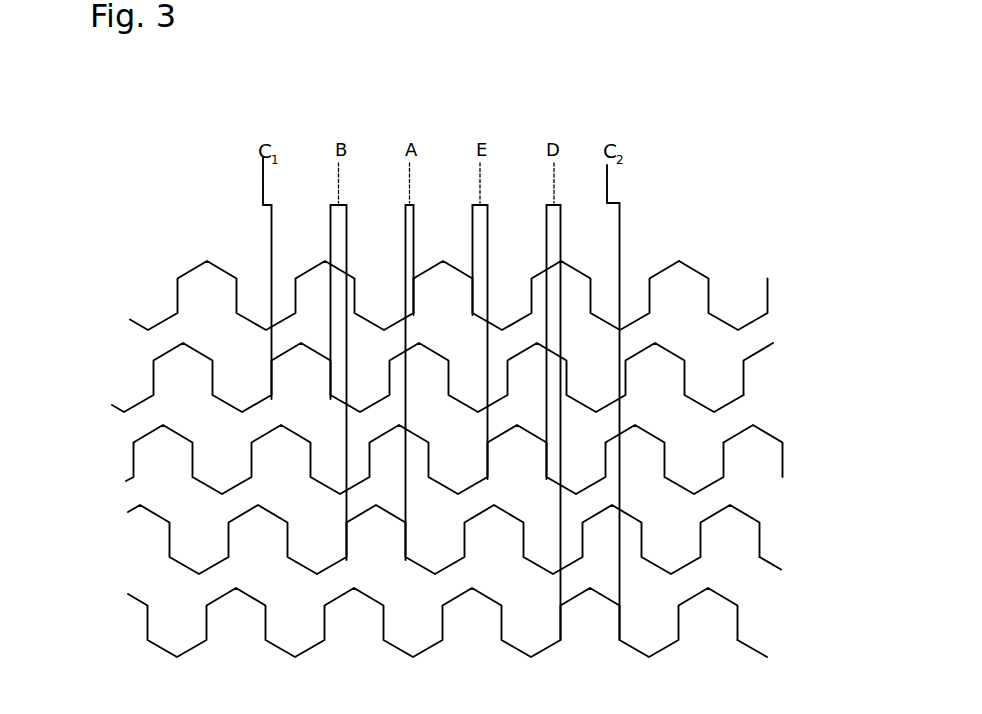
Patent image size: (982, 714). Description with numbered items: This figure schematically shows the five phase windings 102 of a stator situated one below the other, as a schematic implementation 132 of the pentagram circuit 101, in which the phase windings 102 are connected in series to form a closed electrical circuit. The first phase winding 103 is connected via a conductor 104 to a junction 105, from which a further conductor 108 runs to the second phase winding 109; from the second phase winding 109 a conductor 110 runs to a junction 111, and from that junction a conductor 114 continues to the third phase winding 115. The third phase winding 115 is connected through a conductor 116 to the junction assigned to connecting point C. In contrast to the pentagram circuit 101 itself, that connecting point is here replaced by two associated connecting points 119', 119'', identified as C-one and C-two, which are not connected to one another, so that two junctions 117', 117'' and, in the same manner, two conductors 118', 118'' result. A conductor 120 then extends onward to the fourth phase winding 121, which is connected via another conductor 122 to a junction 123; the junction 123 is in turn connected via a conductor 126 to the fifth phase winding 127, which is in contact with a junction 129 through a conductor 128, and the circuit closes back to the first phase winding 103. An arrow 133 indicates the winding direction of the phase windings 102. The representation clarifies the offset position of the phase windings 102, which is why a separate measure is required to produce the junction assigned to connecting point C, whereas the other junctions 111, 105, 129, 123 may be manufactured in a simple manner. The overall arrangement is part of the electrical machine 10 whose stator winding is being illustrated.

The knitted fabric 10 is at (757, 145).
The pentagram circuit 101 is at (128, 152).
The phase windings 102 is at (128, 323).
The first phase winding 103 is at (768, 279).
The conductor 104 is at (414, 228).
The junction 105 is at (411, 203).
The conductor 108 is at (406, 295).
The second phase winding 109 is at (781, 570).
The conductor 110 is at (346, 233).
The junction 111 is at (340, 203).
The conductor 114 is at (330, 233).
The third phase winding 115 is at (773, 343).
The conductor 116 is at (272, 276).
The junction 117' is at (230, 193).
The conductor 118' is at (298, 148).
The connecting point 119' is at (231, 137).
The junction 117'' is at (657, 183).
The conductor 118'' is at (667, 146).
The connecting point 119'' is at (637, 137).
The conductor 120 is at (620, 250).
The fourth phase winding 121 is at (767, 657).
The conductor 122 is at (560, 248).
The junction 123 is at (556, 203).
The conductor 126 is at (546, 266).
The fifth phase winding 127 is at (767, 433).
The conductor 128 is at (515, 212).
The junction 129 is at (480, 203).
The schematic implementation 132 is at (163, 137).
The arrow 133 is at (737, 68).